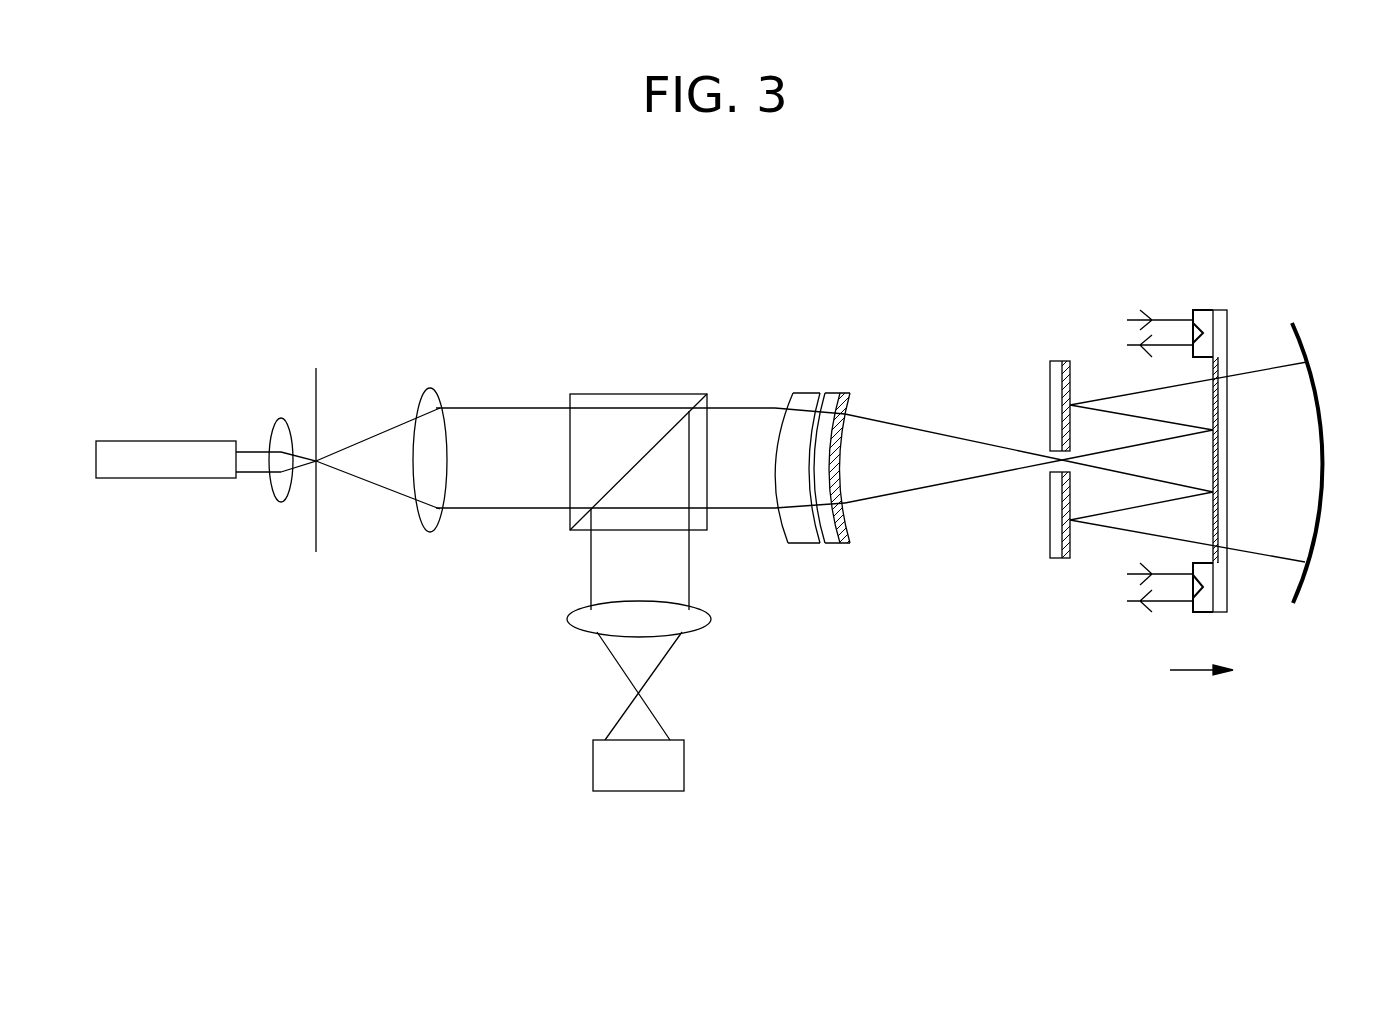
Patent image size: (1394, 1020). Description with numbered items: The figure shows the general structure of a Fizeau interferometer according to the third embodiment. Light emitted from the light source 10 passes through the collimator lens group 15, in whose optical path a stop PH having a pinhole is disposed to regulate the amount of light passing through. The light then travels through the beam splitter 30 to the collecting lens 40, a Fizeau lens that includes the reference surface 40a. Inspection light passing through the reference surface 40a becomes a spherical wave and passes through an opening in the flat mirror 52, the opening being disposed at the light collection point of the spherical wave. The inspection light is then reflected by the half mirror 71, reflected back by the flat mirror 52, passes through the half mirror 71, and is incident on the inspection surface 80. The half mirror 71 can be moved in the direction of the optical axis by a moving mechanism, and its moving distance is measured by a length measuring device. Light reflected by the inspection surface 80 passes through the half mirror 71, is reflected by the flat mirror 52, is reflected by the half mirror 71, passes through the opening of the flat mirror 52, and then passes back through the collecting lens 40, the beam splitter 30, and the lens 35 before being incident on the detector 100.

The light source 10 is at (120, 441).
The collimator lens group 15 is at (516, 398).
The stop PH is at (314, 436).
The beam splitter 30 is at (643, 394).
The lens 35 is at (565, 625).
The collecting lens 40 is at (985, 414).
The reference surface 40a is at (843, 446).
The flat mirror 52 is at (1043, 362).
The half mirror 71 is at (1227, 327).
The inspection surface 80 is at (1317, 373).
The detector 100 is at (670, 775).